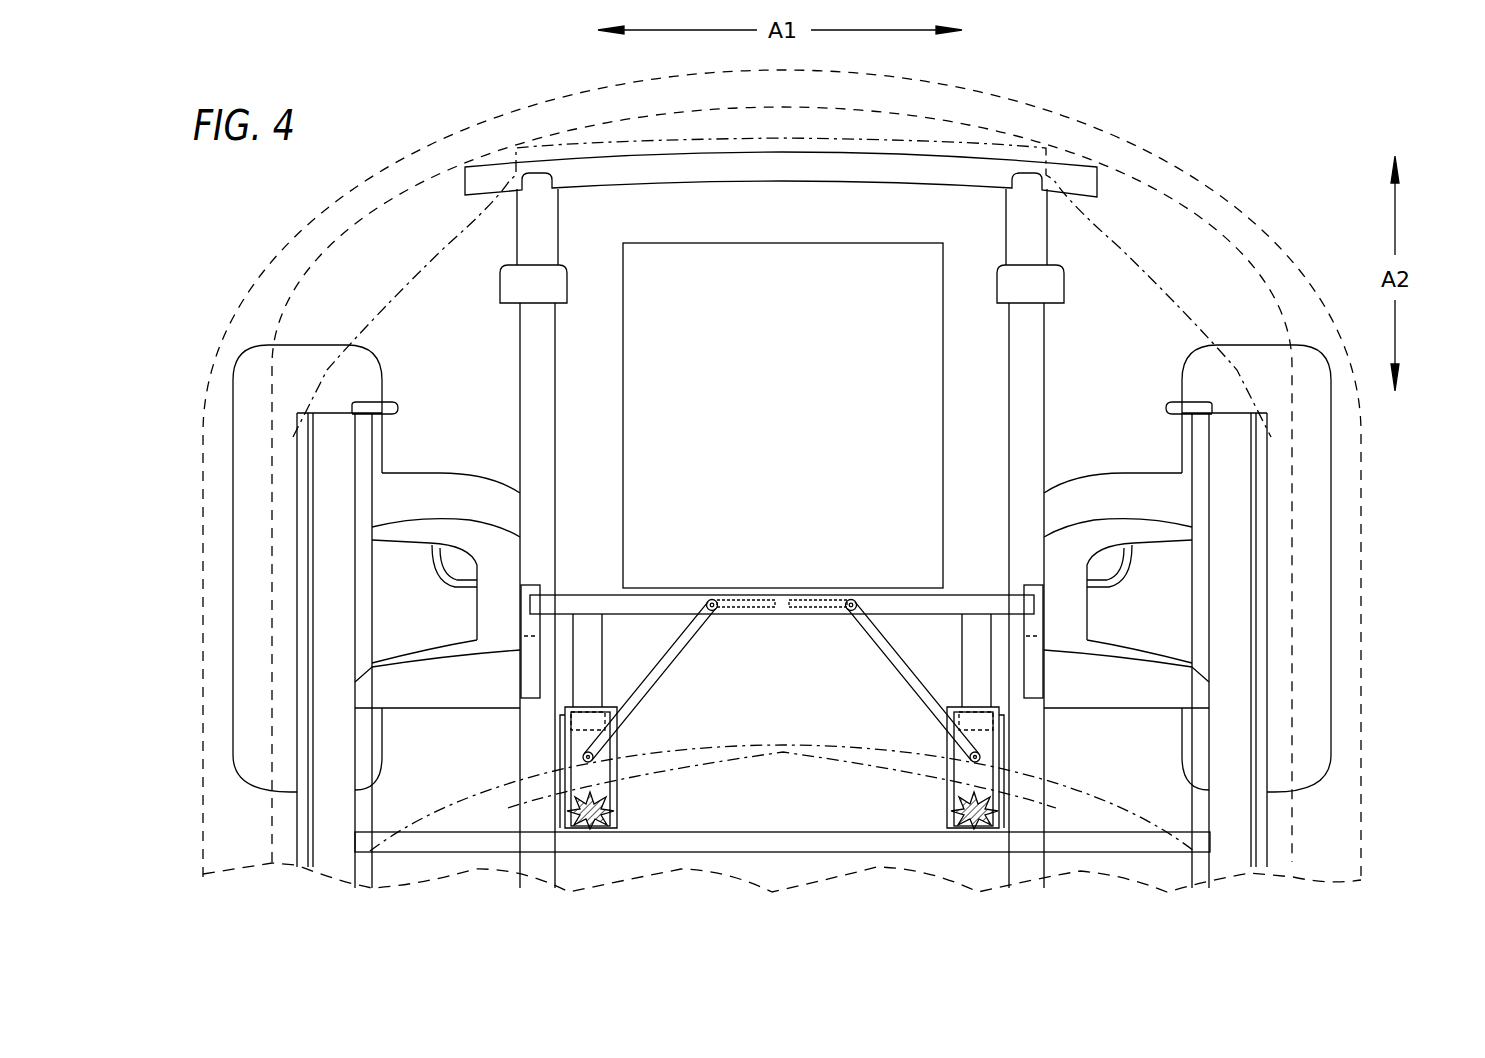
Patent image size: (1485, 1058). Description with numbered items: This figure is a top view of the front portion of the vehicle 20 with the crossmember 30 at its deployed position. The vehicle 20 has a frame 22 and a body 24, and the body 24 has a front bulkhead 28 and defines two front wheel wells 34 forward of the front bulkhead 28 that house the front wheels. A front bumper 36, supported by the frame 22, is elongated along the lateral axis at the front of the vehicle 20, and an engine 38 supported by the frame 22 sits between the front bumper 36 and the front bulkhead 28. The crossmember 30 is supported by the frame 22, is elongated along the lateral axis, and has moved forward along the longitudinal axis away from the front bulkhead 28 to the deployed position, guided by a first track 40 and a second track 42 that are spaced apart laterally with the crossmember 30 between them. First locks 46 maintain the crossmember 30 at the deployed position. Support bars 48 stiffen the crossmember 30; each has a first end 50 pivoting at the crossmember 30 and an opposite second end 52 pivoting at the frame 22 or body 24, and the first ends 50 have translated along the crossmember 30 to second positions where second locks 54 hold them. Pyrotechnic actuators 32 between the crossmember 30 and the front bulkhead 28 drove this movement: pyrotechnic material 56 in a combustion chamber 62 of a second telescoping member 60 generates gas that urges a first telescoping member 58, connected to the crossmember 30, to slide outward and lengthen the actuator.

The vehicle 20 is at (1222, 133).
The frame 22 is at (519, 375).
The body 24 is at (1365, 803).
The front bulkhead 28 is at (772, 853).
The crossmember 30 is at (782, 595).
The pyrotechnic actuator 32 is at (640, 810).
The front wheel well 34 is at (224, 660).
The front bumper 36 is at (962, 152).
The engine 38 is at (799, 418).
The first track 40 is at (1044, 643).
The second track 42 is at (521, 643).
The first lock 46 is at (533, 636).
The support bar 48 is at (670, 668).
The first end 50 is at (851, 614).
The second end 52 is at (617, 747).
The second lock 54 is at (714, 600).
The pyrotechnic material 56 is at (590, 830).
The first telescoping member 58 is at (563, 707).
The second telescoping member 60 is at (561, 716).
The combustion chamber 62 is at (783, 790).